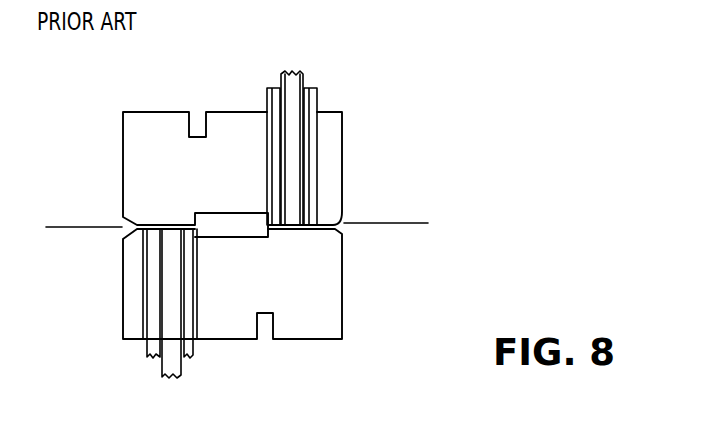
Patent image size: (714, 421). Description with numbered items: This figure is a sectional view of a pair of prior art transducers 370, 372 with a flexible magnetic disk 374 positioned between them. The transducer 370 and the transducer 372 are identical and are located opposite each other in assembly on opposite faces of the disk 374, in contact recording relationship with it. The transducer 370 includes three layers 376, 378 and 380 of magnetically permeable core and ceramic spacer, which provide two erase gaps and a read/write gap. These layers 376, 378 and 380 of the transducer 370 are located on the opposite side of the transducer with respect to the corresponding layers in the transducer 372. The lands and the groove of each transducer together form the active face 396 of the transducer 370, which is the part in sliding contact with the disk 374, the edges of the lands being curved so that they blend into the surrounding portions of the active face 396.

The transducer 370 is at (342, 150).
The transducer 372 is at (342, 290).
The flexible magnetic disk 374 is at (396, 222).
The layer 376 is at (276, 88).
The layer 378 is at (290, 72).
The layer 380 is at (309, 88).
The active face 396 is at (170, 228).